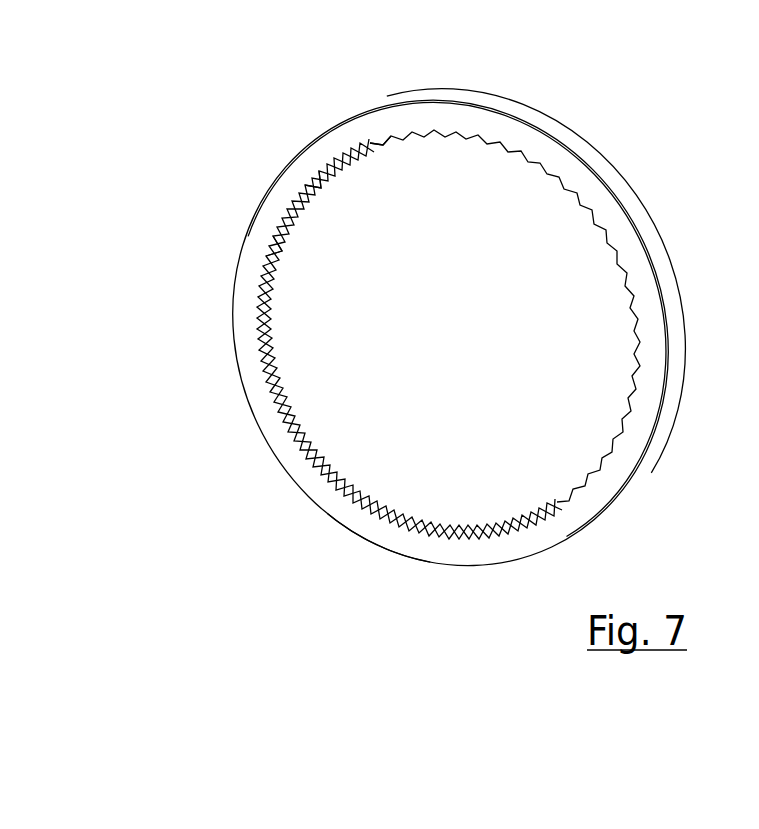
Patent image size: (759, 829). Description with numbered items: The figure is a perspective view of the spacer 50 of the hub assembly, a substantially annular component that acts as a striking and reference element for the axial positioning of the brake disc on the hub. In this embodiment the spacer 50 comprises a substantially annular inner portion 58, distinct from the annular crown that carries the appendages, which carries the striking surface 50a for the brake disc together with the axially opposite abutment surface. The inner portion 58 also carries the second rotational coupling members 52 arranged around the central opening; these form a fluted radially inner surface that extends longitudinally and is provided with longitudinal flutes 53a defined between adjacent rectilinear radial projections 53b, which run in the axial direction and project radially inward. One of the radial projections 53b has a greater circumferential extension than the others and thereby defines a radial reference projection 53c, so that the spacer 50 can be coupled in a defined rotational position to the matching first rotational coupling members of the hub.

The spacer 50 is at (280, 85).
The striking surface 50a is at (360, 518).
The second rotational coupling members 52 is at (340, 452).
The longitudinal flutes 53a is at (372, 142).
The radial projections 53b is at (310, 185).
The radial reference projection 53c is at (270, 257).
The annular inner portion 58 is at (246, 338).